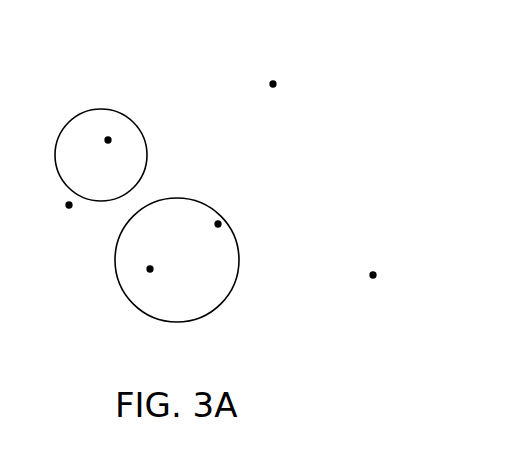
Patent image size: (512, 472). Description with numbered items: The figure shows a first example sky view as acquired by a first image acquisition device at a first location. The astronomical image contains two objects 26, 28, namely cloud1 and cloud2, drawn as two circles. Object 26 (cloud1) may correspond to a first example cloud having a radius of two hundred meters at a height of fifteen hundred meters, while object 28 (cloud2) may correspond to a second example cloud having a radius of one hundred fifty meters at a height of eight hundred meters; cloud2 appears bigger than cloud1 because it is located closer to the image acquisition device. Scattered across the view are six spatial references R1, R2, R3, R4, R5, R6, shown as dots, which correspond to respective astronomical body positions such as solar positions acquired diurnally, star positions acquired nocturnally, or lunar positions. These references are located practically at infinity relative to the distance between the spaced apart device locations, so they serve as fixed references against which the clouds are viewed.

The object 26 is at (99, 110).
The object 28 is at (193, 198).
The spatial reference R1 is at (69, 205).
The spatial reference R2 is at (108, 140).
The spatial reference R3 is at (273, 84).
The spatial reference R4 is at (150, 269).
The spatial reference R5 is at (218, 224).
The spatial reference R6 is at (373, 275).